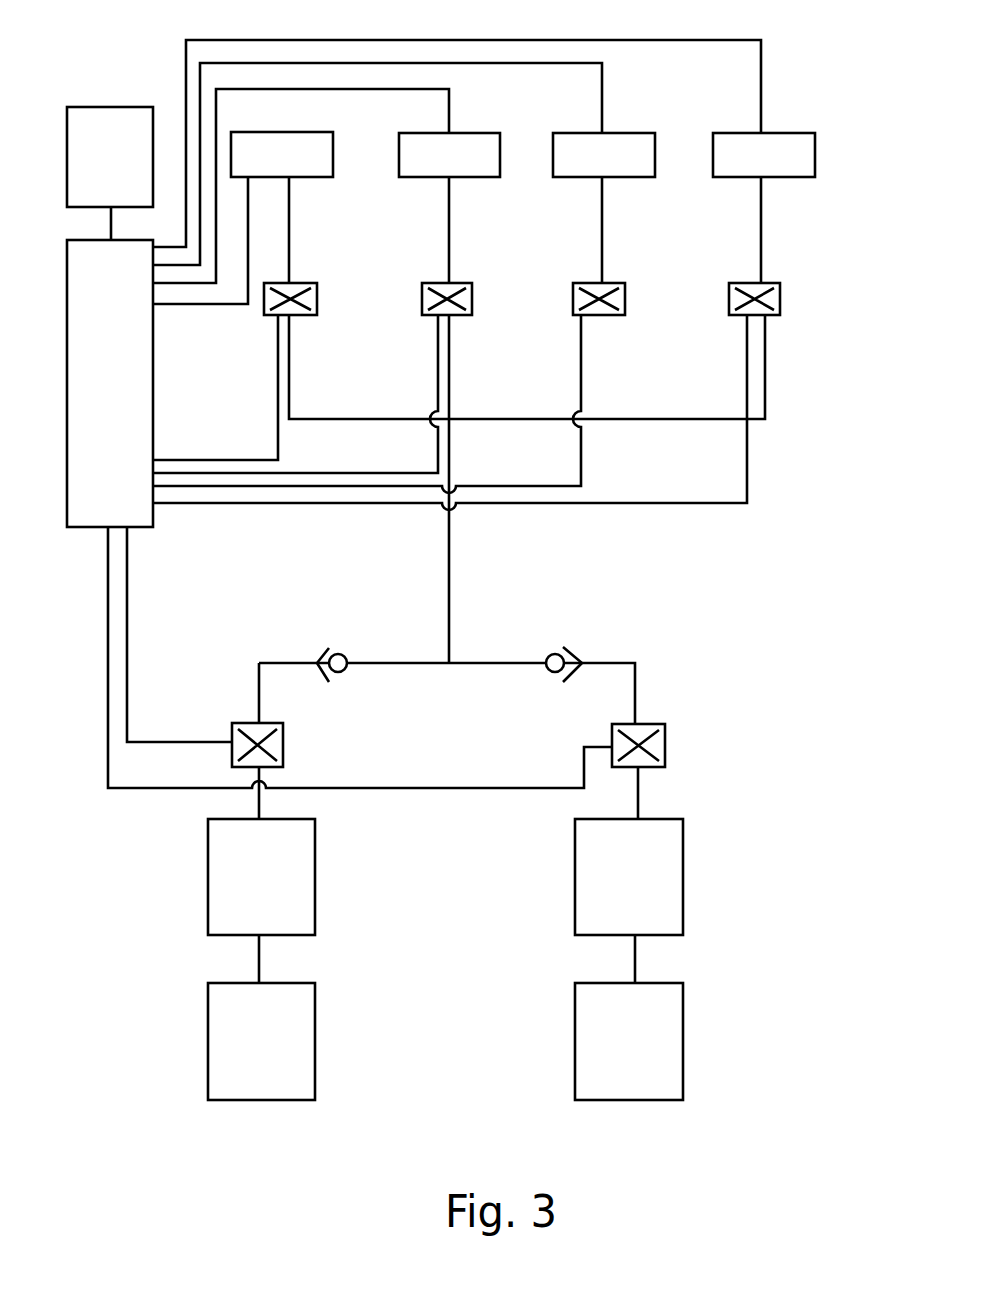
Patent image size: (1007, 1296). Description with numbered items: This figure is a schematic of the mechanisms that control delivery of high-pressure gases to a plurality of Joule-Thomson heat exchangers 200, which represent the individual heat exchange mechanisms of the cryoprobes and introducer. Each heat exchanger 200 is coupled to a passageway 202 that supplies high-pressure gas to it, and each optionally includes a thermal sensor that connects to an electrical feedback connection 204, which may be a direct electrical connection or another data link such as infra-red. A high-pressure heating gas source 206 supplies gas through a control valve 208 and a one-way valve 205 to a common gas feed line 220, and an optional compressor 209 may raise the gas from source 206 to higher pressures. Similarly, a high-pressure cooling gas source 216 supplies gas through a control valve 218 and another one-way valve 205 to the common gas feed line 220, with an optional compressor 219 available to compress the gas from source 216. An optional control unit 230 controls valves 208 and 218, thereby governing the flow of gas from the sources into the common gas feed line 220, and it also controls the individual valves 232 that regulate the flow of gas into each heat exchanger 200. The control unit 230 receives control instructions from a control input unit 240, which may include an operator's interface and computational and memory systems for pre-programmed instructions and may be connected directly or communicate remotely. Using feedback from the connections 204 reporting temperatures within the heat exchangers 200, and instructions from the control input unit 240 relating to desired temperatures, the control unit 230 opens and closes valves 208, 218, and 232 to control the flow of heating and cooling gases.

The Joule-Thomson heat exchanger 200 is at (335, 148).
The passageway 202 is at (288, 238).
The electrical feedback connection 204 is at (761, 69).
The one-way valve 205 is at (352, 645).
The high-pressure heating gas source 206 is at (308, 1050).
The control valve 208 is at (283, 743).
The compressor 209 is at (307, 882).
The high-pressure cooling gas source 216 is at (675, 1045).
The control valve 218 is at (665, 745).
The compressor 219 is at (680, 893).
The common gas feed line 220 is at (450, 565).
The control unit 230 is at (72, 511).
The valve 232 is at (310, 296).
The control input unit 240 is at (117, 114).